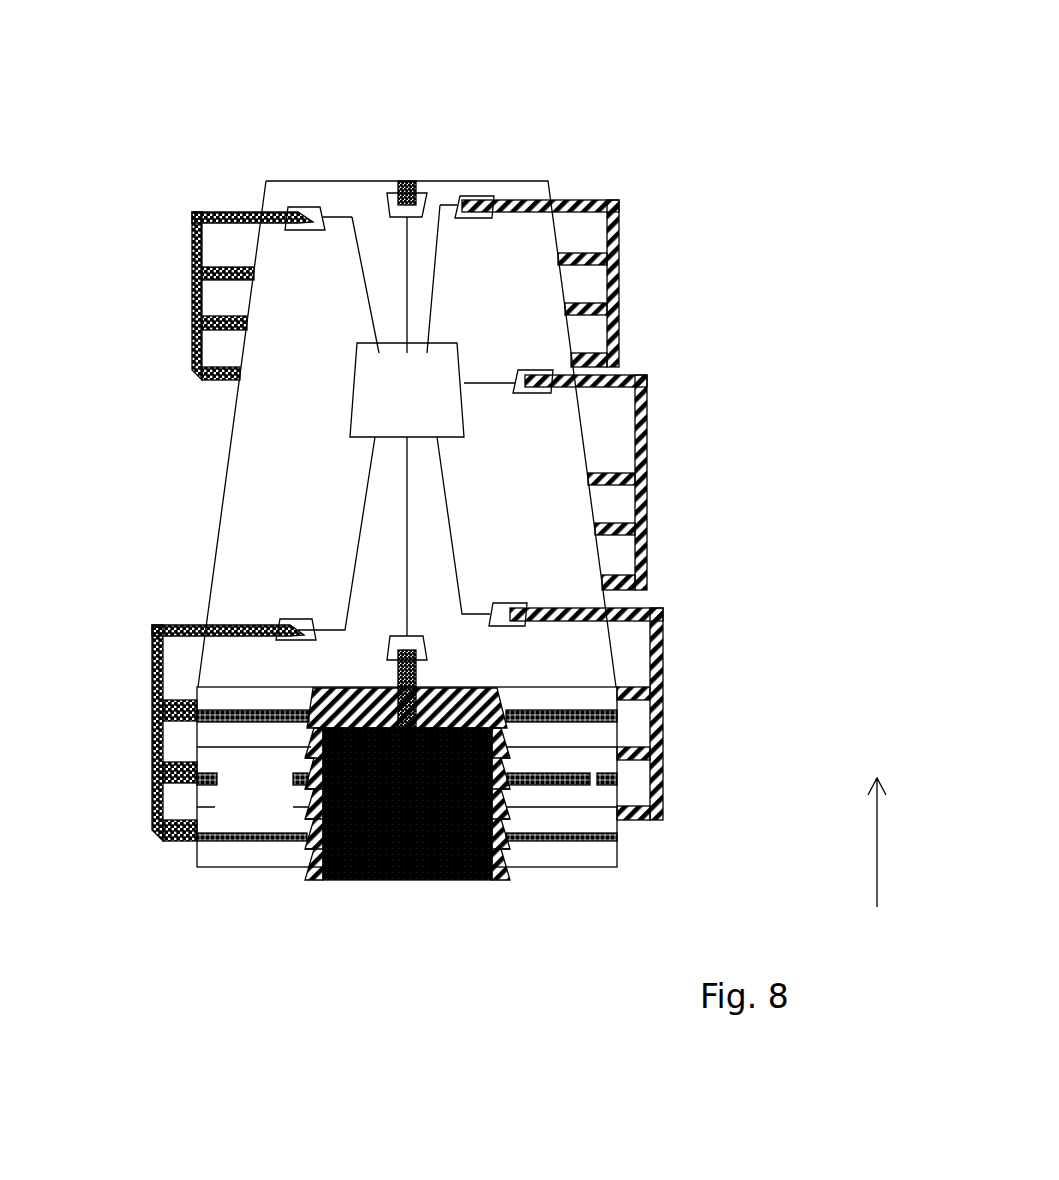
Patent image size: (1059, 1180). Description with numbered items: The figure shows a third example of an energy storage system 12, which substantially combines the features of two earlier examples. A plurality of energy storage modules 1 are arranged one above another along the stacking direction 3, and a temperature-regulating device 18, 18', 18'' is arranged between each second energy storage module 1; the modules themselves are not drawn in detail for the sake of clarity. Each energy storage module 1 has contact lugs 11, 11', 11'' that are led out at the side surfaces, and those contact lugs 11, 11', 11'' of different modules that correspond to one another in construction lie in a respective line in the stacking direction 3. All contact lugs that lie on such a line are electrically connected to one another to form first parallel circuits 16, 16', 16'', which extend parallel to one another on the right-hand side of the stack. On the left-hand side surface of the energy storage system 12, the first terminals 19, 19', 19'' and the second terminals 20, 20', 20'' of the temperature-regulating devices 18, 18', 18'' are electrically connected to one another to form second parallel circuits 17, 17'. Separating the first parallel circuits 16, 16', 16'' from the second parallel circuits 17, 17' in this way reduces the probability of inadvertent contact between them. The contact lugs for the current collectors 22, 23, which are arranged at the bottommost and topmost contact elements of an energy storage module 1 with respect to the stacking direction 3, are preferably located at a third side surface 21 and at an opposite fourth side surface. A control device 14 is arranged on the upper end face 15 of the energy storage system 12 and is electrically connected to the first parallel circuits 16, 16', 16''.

The energy storage module 1 is at (255, 858).
The stacking direction 3 is at (859, 842).
The contact lug 11 is at (582, 192).
The contact lug 11' is at (651, 293).
The contact lug 11'' is at (658, 346).
The energy storage system 12 is at (493, 124).
The control device 14 is at (420, 392).
The upper end face 15 is at (296, 516).
The first parallel circuit 16 is at (629, 711).
The first parallel circuit 16' is at (636, 480).
The first parallel circuit 16'' is at (597, 281).
The second parallel circuit 17 is at (176, 730).
The second parallel circuit 17' is at (203, 293).
The temperature-regulating device 18 is at (559, 881).
The temperature-regulating device 18' is at (562, 848).
The temperature-regulating device 18'' is at (594, 804).
The first terminal 19 is at (173, 889).
The first terminal 19' is at (131, 811).
The first terminal 19'' is at (120, 745).
The second terminal 20 is at (168, 412).
The second terminal 20' is at (166, 356).
The second terminal 20'' is at (168, 296).
The third side surface 21 is at (268, 787).
The current collector 22 is at (405, 882).
The current collector 23 is at (407, 181).